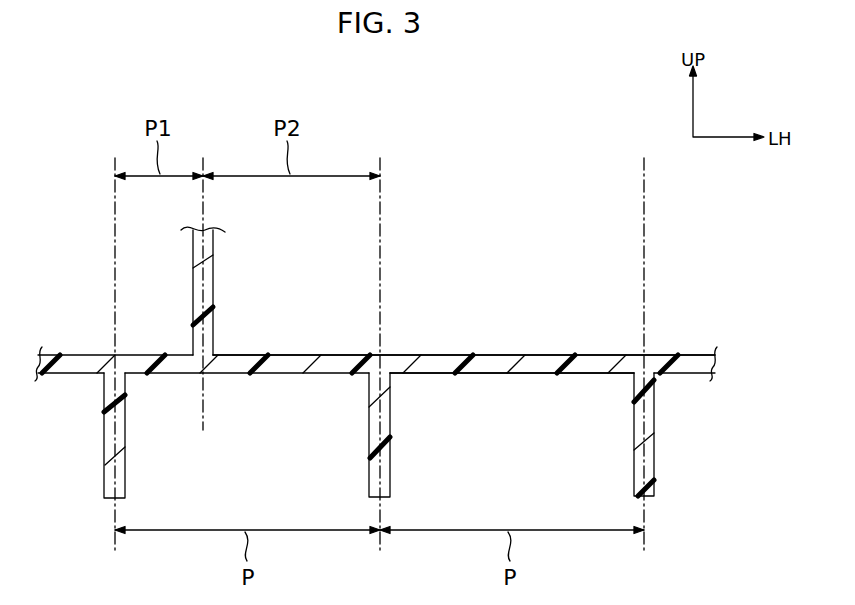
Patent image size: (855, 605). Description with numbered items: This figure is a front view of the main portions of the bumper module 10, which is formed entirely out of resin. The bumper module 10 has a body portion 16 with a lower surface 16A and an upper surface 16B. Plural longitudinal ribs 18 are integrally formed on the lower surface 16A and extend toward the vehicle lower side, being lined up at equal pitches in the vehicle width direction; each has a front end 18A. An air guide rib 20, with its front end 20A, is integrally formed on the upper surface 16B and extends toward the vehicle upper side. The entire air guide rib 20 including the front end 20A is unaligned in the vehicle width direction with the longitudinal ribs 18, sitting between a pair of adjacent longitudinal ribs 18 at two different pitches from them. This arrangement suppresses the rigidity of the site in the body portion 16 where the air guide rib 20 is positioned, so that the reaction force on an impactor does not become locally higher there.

The bumper module 10 is at (393, 145).
The body portion 16 is at (472, 352).
The lower surface 16A is at (508, 376).
The upper surface 16B is at (537, 352).
The longitudinal rib 18 is at (126, 458).
The front end 18A is at (106, 458).
The air guide rib 20 is at (215, 272).
The front end 20A is at (200, 267).